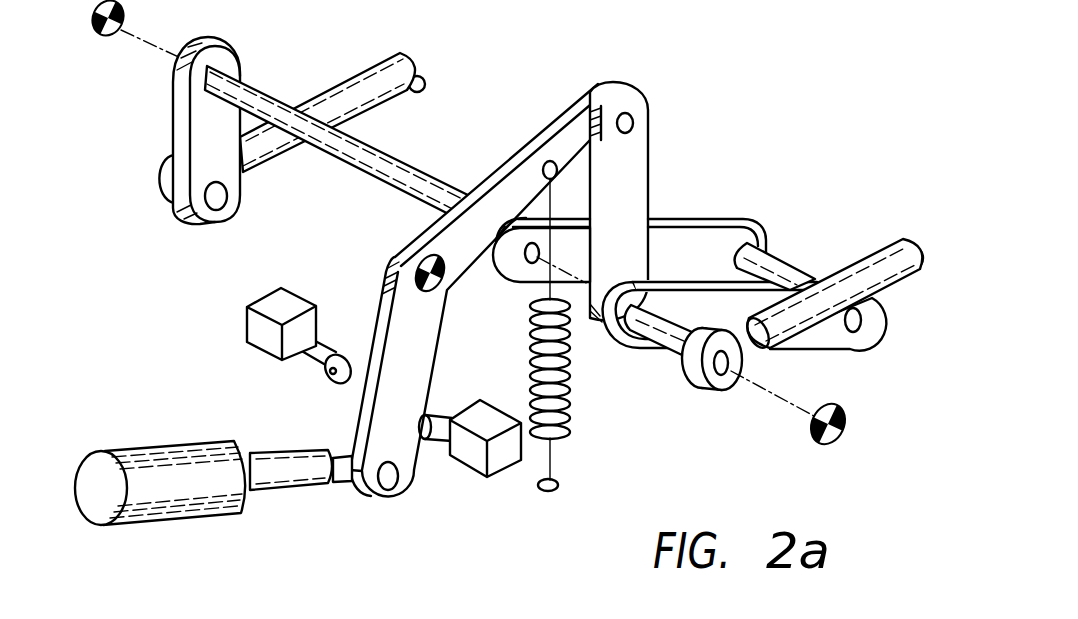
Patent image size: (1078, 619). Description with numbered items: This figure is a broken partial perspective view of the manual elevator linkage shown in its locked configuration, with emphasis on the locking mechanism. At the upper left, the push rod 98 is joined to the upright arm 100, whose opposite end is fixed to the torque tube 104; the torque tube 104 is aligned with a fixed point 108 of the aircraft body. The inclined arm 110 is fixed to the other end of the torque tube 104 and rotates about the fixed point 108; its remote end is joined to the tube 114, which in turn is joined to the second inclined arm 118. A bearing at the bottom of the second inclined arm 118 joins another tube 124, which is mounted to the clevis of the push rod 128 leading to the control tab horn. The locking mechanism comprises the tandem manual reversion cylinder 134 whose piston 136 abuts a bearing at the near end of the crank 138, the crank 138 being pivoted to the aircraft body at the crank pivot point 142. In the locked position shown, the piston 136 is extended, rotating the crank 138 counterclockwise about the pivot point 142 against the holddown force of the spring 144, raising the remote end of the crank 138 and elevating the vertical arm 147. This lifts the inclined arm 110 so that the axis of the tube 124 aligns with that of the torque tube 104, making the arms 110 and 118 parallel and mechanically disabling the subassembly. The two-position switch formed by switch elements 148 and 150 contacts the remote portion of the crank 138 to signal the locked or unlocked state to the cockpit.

The push rod 98 is at (370, 82).
The upright arm 100 is at (198, 136).
The torque tube 104 is at (360, 160).
The fixed point 108 is at (822, 445).
The inclined arm 110 is at (710, 222).
The tube 114 is at (775, 263).
The second inclined arm 118 is at (770, 297).
The tube 124 is at (672, 342).
The push rod 128 is at (890, 270).
The tandem manual reversion cylinder 134 is at (163, 495).
The piston 136 is at (290, 468).
The crank 138 is at (512, 192).
The crank pivot point 142 is at (404, 262).
The spring 144 is at (565, 427).
The vertical arm 147 is at (645, 143).
The switch element 148 is at (253, 328).
The switch element 150 is at (505, 460).